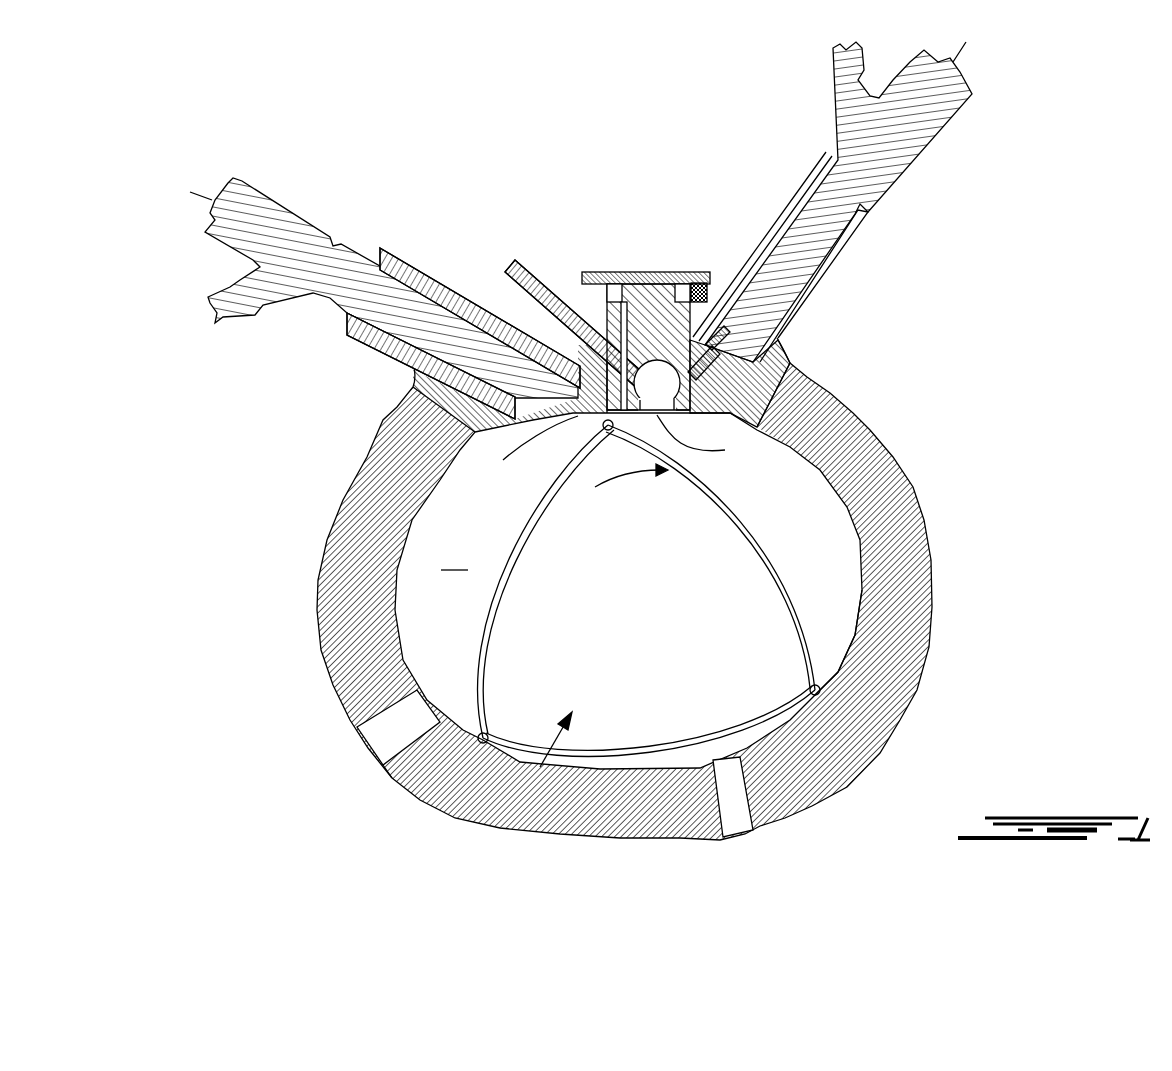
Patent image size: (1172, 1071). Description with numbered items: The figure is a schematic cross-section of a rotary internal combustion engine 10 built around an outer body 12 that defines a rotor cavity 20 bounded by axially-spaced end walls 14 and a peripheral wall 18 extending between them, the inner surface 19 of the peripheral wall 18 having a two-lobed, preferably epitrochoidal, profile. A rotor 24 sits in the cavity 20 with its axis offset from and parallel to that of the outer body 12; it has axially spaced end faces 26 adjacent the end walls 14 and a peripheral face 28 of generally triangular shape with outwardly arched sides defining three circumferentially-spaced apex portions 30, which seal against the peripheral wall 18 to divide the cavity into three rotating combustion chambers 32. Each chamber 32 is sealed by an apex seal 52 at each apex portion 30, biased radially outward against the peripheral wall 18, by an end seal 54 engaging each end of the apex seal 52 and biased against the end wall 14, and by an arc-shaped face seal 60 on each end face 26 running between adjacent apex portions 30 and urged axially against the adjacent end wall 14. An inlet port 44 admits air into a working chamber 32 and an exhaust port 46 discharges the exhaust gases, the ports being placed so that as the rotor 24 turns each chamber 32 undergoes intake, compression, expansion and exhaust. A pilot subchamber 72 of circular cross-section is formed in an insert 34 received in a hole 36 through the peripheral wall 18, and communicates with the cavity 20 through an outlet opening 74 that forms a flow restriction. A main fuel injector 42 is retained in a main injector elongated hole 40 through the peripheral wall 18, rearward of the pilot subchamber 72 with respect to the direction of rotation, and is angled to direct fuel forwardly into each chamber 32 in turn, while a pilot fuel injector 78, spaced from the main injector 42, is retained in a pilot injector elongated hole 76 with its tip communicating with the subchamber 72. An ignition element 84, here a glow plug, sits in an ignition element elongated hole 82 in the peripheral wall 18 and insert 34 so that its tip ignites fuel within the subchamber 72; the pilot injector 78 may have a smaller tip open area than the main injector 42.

The engine 10 is at (1028, 272).
The outer body 12 is at (847, 382).
The end walls 14 is at (793, 473).
The peripheral wall 18 is at (900, 512).
The inner surface 19 is at (765, 420).
The rotor cavity 20 is at (835, 572).
The rotor 24 is at (500, 802).
The end faces 26 is at (737, 663).
The peripheral face 28 is at (760, 733).
The apex portions 30 is at (827, 697).
The combustion chambers 32 is at (510, 459).
The insert 34 is at (663, 370).
The hole 36 is at (641, 300).
The main injector elongated hole 40 is at (403, 293).
The main fuel injector 42 is at (258, 180).
The inlet port 44 is at (382, 735).
The exhaust port 46 is at (770, 815).
The apex seal 52 is at (450, 755).
The end seal 54 is at (490, 720).
The face seal 60 is at (490, 630).
The pilot subchamber 72 is at (701, 282).
The outlet opening 74 is at (685, 463).
The pilot injector elongated hole 76 is at (825, 228).
The pilot fuel injector 78 is at (950, 120).
The ignition element elongated hole 82 is at (612, 325).
The ignition element 84 is at (517, 268).